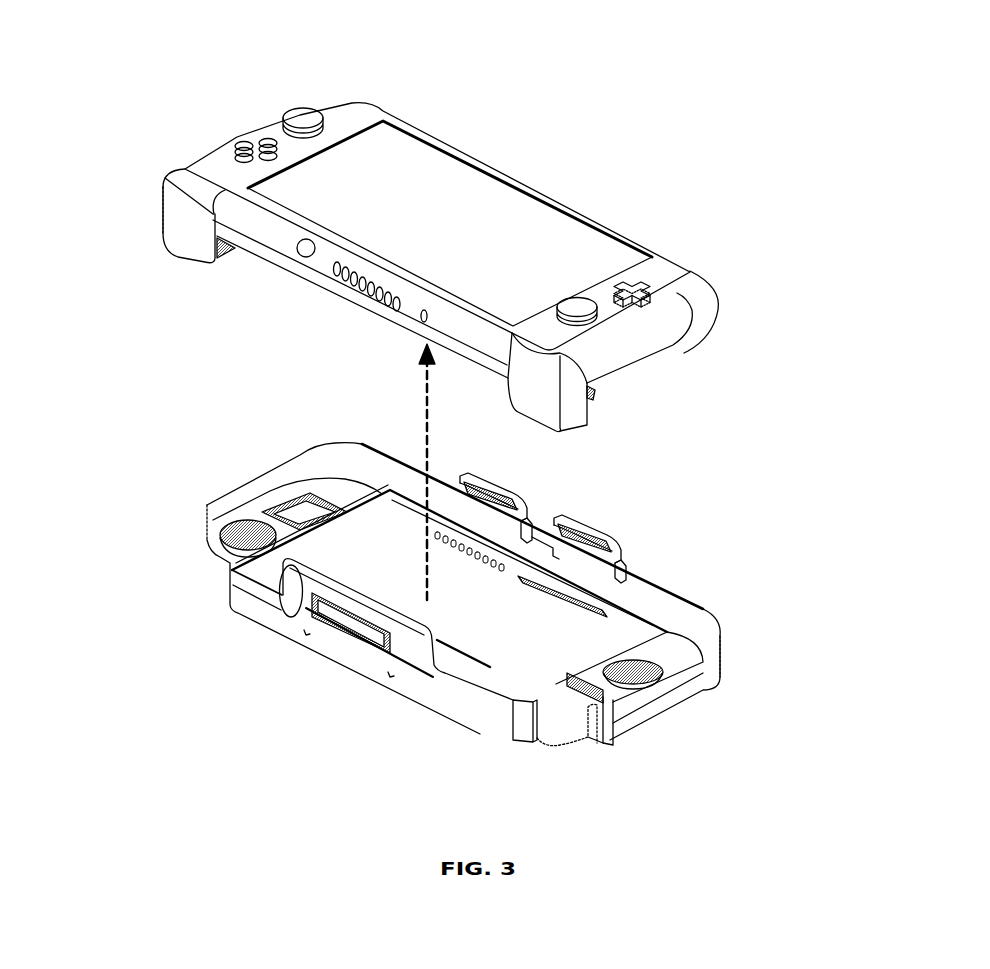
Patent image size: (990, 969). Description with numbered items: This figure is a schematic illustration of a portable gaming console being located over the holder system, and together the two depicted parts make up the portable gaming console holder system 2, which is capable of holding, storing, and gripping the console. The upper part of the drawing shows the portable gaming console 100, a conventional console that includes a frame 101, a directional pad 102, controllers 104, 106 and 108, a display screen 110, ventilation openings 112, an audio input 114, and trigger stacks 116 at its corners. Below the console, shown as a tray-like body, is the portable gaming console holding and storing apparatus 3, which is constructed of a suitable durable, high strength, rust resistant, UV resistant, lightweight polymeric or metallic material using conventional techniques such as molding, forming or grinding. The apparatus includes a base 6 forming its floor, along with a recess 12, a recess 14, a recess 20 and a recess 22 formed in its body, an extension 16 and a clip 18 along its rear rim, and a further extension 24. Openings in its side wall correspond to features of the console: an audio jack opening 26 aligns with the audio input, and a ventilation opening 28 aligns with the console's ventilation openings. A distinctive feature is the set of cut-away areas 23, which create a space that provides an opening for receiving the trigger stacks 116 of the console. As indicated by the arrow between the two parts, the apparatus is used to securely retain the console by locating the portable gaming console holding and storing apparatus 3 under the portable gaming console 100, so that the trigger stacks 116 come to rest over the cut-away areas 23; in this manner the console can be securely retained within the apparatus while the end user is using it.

The portable gaming console 100 is at (702, 194).
The frame 101 is at (585, 212).
The display screen 110 is at (453, 232).
The directional pad 102 is at (648, 290).
The controller 104 is at (592, 317).
The controller 106 is at (311, 118).
The controller 108 is at (216, 131).
The ventilation openings 112 is at (362, 292).
The audio input 114 is at (302, 255).
The trigger stacks 116 is at (182, 233).
The portable gaming console holder system 2 is at (825, 365).
The portable gaming console holding and storing apparatus 3 is at (748, 604).
The base 6 is at (470, 622).
The recess 12 is at (525, 762).
The recess 14 is at (652, 682).
The extension 16 is at (528, 512).
The clip 18 is at (476, 478).
The recess 20 is at (282, 497).
The recess 22 is at (193, 578).
The cut-away areas 23 is at (190, 557).
The extension 24 is at (434, 672).
The audio jack opening 26 is at (288, 617).
The ventilation opening 28 is at (348, 632).